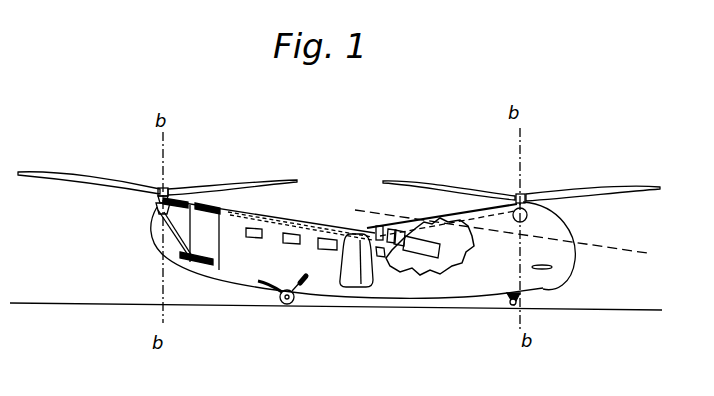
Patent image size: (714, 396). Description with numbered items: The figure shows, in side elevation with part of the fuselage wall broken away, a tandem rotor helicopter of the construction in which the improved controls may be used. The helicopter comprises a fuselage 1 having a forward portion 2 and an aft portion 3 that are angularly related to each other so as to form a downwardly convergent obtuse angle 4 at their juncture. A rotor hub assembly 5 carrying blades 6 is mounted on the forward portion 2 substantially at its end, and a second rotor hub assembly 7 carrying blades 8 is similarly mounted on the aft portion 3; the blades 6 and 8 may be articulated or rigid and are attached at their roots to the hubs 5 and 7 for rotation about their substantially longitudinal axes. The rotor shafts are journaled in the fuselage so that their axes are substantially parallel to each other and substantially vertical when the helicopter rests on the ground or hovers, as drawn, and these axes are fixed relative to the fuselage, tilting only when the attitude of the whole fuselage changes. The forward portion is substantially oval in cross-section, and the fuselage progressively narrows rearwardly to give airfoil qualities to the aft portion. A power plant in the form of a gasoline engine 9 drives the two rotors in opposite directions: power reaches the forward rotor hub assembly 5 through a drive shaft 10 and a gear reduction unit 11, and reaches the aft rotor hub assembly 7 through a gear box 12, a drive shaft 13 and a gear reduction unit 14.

The fuselage 1 is at (374, 301).
The forward portion 2 is at (242, 133).
The aft portion 3 is at (533, 112).
The downwardly convergent obtuse angle 4 is at (355, 210).
The rotor hub assembly 5 is at (167, 185).
The blades 6 is at (76, 180).
The second rotor hub assembly 7 is at (525, 194).
The blades 8 is at (585, 191).
The gasoline engine 9 is at (442, 248).
The drive shaft 10 is at (274, 222).
The gear reduction unit 11 is at (157, 206).
The gear box 12 is at (382, 223).
The drive shaft 13 is at (457, 224).
The gear reduction unit 14 is at (528, 216).